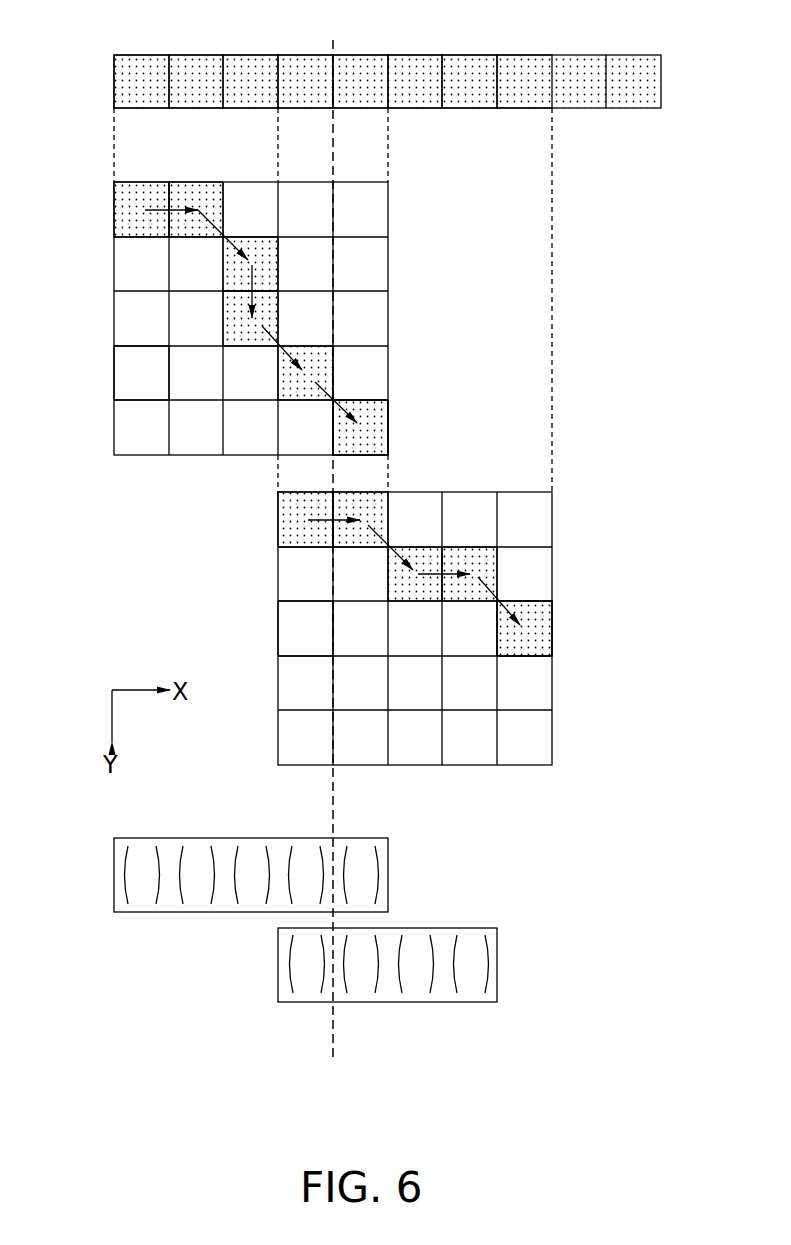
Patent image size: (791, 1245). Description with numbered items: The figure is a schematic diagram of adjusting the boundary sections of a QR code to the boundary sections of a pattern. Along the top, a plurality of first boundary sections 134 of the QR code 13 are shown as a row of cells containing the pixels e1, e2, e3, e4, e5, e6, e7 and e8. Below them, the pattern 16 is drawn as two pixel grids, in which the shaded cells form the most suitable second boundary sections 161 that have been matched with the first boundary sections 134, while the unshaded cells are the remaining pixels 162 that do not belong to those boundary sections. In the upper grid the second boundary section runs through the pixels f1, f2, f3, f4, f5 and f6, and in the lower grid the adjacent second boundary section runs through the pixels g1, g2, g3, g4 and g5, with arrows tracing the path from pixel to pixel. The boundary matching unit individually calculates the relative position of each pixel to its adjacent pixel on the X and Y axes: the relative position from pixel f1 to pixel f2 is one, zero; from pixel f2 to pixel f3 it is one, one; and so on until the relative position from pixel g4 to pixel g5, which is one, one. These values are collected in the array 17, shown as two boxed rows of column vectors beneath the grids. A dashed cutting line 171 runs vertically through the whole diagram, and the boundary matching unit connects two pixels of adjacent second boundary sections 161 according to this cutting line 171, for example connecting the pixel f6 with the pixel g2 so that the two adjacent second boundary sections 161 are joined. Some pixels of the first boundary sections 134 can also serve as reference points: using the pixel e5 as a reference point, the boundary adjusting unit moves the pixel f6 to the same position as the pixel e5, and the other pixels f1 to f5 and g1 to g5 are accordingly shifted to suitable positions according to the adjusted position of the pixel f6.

The QR code 13 is at (338, 54).
The first boundary sections 134 is at (338, 60).
The pixel map 16 is at (331, 471).
The second boundary sections 161 is at (114, 200).
The untouched pixel 162 is at (114, 385).
The array 17 is at (277, 965).
The cutting line 171 is at (332, 565).
The pixel e1 is at (141, 78).
The pixel e2 is at (196, 78).
The pixel e3 is at (250, 78).
The pixel e4 is at (302, 78).
The pixel e5 is at (360, 78).
The pixel e6 is at (414, 78).
The pixel e7 is at (468, 78).
The pixel e8 is at (522, 78).
The pixel f1 is at (131, 218).
The pixel f2 is at (182, 222).
The pixel f3 is at (228, 266).
The pixel f4 is at (228, 320).
The pixel f5 is at (320, 368).
The pixel f6 is at (352, 420).
The pixel g1 is at (278, 508).
The pixel g2 is at (382, 490).
The pixel g3 is at (420, 560).
The pixel g4 is at (480, 577).
The pixel g5 is at (528, 632).